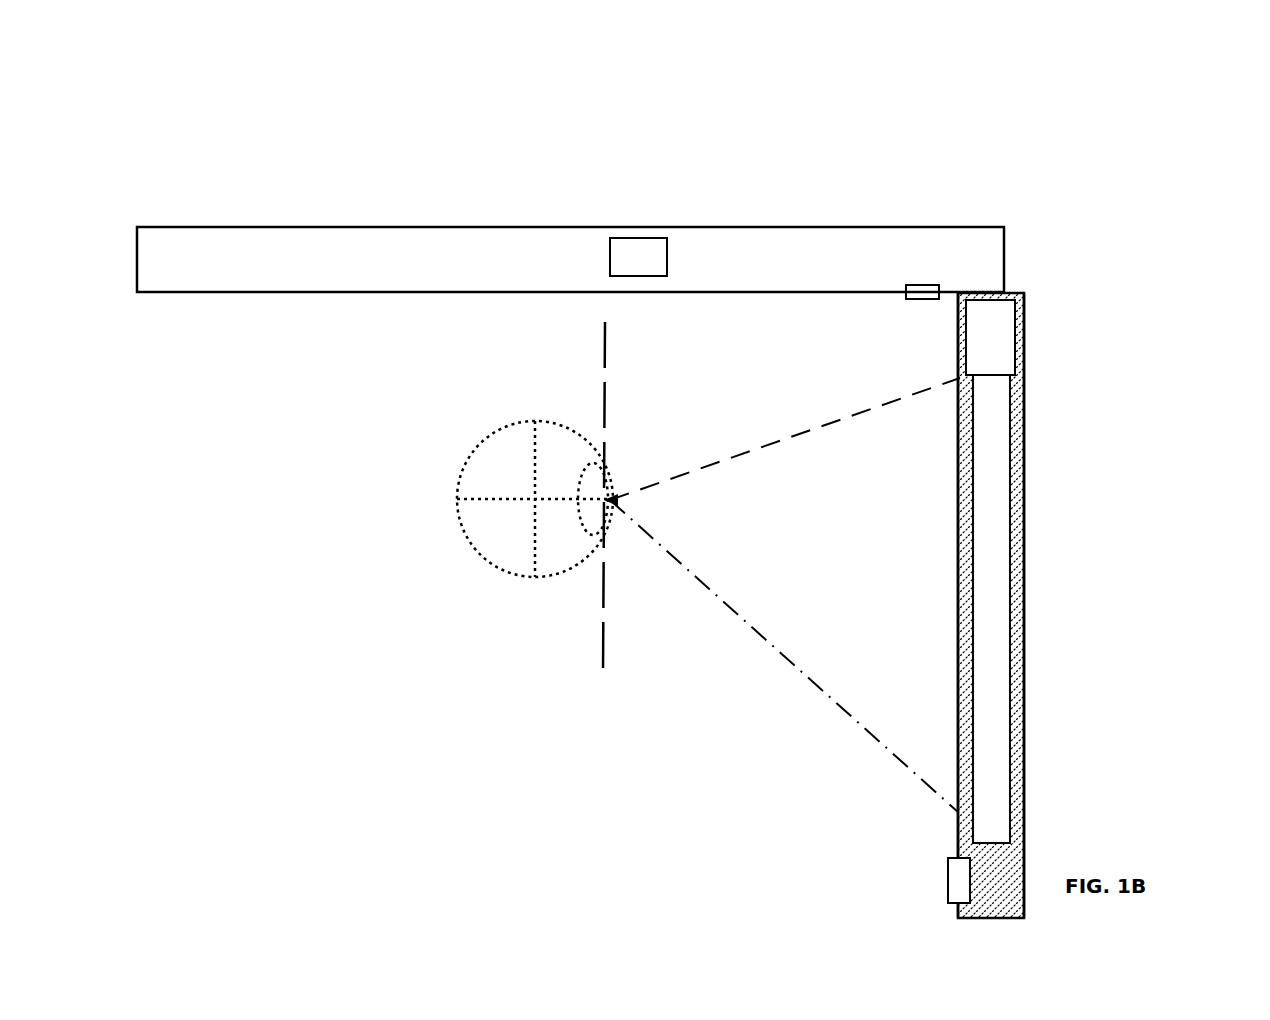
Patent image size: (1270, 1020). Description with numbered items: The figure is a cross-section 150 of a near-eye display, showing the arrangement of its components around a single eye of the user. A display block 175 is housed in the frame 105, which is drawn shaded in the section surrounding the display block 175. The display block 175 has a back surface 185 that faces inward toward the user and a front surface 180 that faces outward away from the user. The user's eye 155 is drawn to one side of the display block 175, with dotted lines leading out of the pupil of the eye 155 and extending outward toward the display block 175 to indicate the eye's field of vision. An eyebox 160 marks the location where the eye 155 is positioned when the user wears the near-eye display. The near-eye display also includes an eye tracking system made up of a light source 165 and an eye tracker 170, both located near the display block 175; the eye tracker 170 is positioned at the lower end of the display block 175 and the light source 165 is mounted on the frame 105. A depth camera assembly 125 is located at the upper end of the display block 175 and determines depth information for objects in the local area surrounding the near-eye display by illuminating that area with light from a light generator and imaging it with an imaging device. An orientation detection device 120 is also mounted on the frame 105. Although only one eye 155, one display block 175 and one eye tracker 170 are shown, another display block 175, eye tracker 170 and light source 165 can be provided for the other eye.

The frame 105 is at (855, 227).
The orientation detection device 120 is at (637, 238).
The depth camera assembly 125 is at (990, 350).
The cross-section 150 is at (697, 472).
The eye 155 is at (490, 435).
The eyebox 160 is at (602, 602).
The light source 165 is at (923, 300).
The eye tracker 170 is at (947, 880).
The display block 175 is at (992, 490).
The front surface 180 is at (1139, 605).
The back surface 185 is at (846, 605).